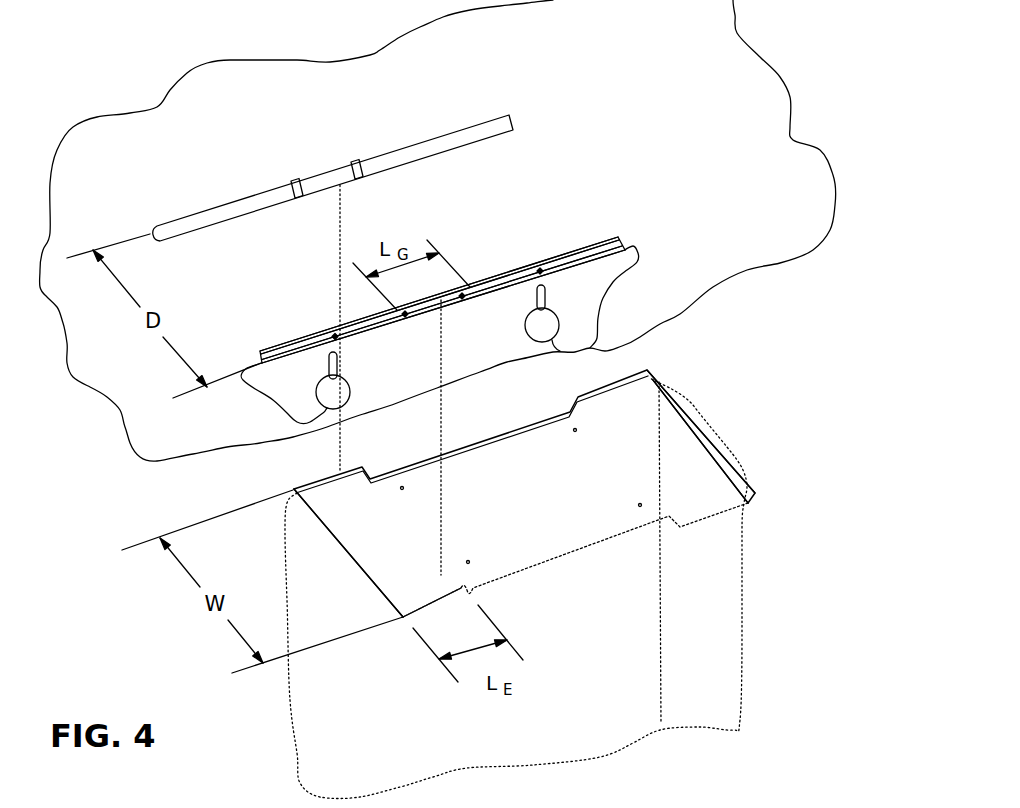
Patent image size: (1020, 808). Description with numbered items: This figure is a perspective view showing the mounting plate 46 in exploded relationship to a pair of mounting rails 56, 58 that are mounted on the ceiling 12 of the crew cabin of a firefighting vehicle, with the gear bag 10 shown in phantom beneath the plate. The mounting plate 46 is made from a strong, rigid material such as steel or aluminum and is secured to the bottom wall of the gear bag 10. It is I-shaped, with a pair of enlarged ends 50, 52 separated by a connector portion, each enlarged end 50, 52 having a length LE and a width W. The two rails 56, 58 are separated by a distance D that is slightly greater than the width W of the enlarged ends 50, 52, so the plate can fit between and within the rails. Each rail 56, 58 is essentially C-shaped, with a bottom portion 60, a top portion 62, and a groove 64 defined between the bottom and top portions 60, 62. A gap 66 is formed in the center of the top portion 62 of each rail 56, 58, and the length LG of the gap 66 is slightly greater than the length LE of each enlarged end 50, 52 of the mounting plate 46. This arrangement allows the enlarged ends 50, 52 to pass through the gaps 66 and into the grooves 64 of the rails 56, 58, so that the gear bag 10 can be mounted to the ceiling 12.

The gear bag 10 is at (742, 583).
The ceiling 12 is at (582, 178).
The mounting plate 46 is at (561, 518).
The enlarged end 50 is at (406, 600).
The enlarged end 52 is at (687, 461).
The mounting rail 56 is at (184, 218).
The mounting rail 58 is at (281, 339).
The bottom portion 60 is at (483, 282).
The top portion 62 is at (503, 296).
The groove 64 is at (624, 243).
The gap 66 is at (420, 330).